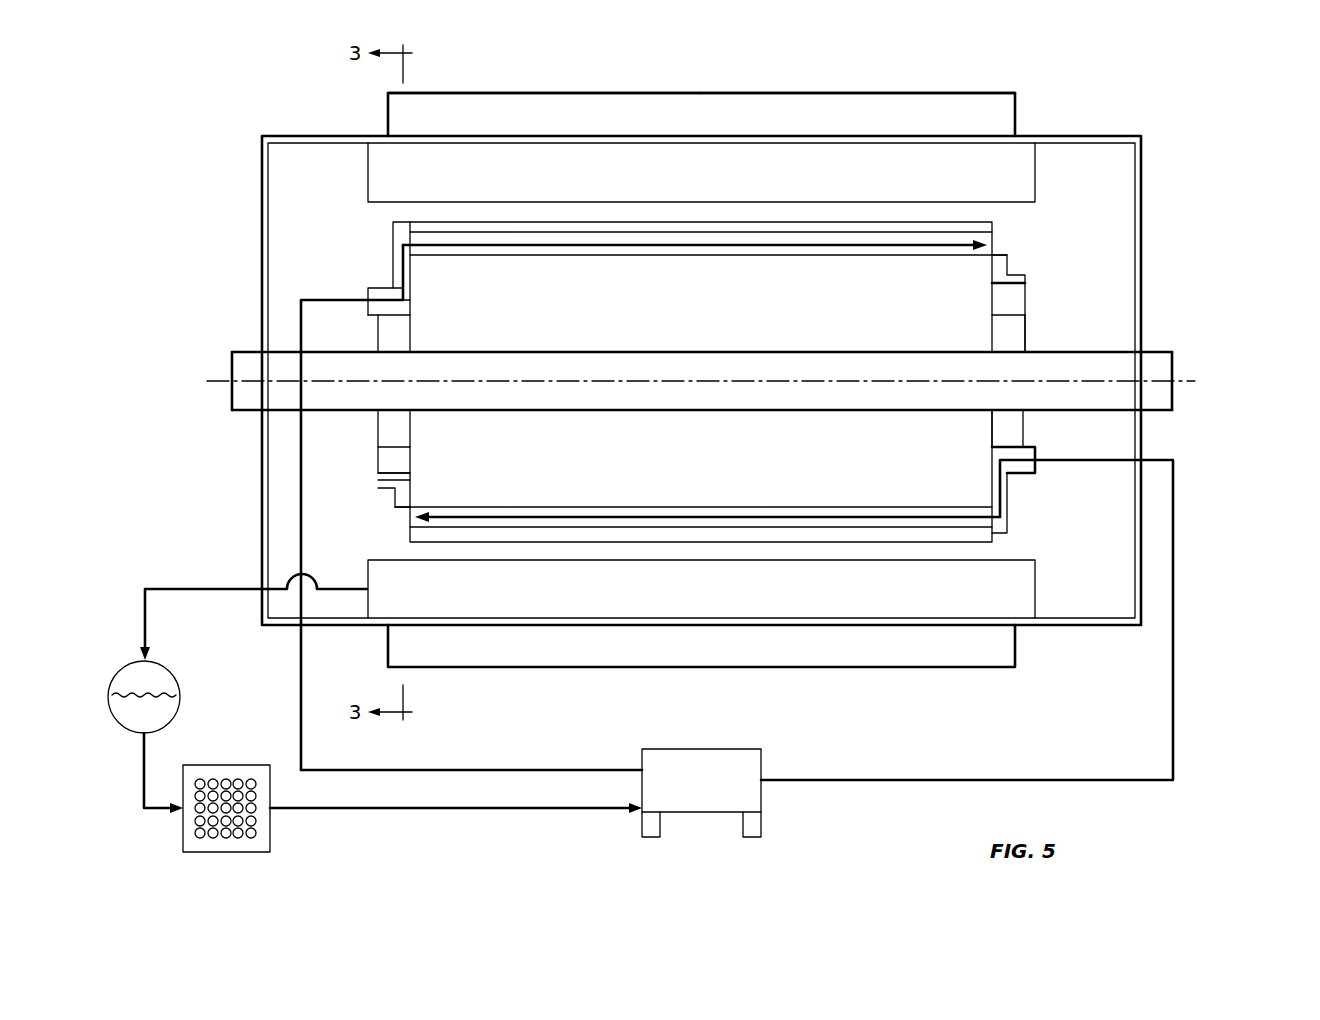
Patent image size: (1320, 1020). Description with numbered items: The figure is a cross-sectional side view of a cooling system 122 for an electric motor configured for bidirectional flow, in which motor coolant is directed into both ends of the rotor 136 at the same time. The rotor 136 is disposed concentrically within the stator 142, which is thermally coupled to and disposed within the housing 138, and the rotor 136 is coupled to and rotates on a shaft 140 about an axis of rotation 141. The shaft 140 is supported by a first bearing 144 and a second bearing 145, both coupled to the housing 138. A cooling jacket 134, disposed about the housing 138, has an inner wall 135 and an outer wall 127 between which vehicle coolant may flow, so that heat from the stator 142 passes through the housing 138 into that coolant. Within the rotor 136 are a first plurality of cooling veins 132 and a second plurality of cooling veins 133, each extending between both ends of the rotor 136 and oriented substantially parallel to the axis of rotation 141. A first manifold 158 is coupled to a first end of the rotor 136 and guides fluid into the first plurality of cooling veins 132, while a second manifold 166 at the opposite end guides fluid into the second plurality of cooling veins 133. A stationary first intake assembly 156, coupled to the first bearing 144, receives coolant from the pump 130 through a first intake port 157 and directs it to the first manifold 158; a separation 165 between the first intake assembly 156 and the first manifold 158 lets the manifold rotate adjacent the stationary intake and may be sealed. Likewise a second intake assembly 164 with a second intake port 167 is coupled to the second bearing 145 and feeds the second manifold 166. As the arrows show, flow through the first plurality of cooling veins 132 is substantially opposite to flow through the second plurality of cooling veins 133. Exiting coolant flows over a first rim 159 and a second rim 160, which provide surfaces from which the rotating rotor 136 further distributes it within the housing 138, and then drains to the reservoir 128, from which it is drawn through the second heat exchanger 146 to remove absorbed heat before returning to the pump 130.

The cooling system 122 is at (1236, 95).
The outer wall 127 is at (507, 92).
The reservoir 128 is at (237, 653).
The pump 130 is at (531, 793).
The first plurality of cooling veins 132 is at (857, 501).
The second plurality of cooling veins 133 is at (855, 257).
The cooling jacket 134 is at (701, 380).
The inner wall 135 is at (893, 135).
The rotor 136 is at (708, 382).
The housing 138 is at (318, 145).
The shaft 140 is at (702, 381).
The axis of rotation 141 is at (1185, 375).
The stator 142 is at (701, 380).
The first bearing 144 is at (377, 342).
The second bearing 145 is at (1020, 337).
The second heat exchanger 146 is at (240, 763).
The first intake assembly 156 is at (403, 307).
The first intake port 157 is at (367, 290).
The first manifold 158 is at (393, 237).
The first rim 159 is at (405, 508).
The second rim 160 is at (1000, 255).
The second intake assembly 164 is at (1025, 303).
The separation 165 is at (387, 283).
The second manifold 166 is at (1015, 278).
The second intake port 167 is at (1037, 468).